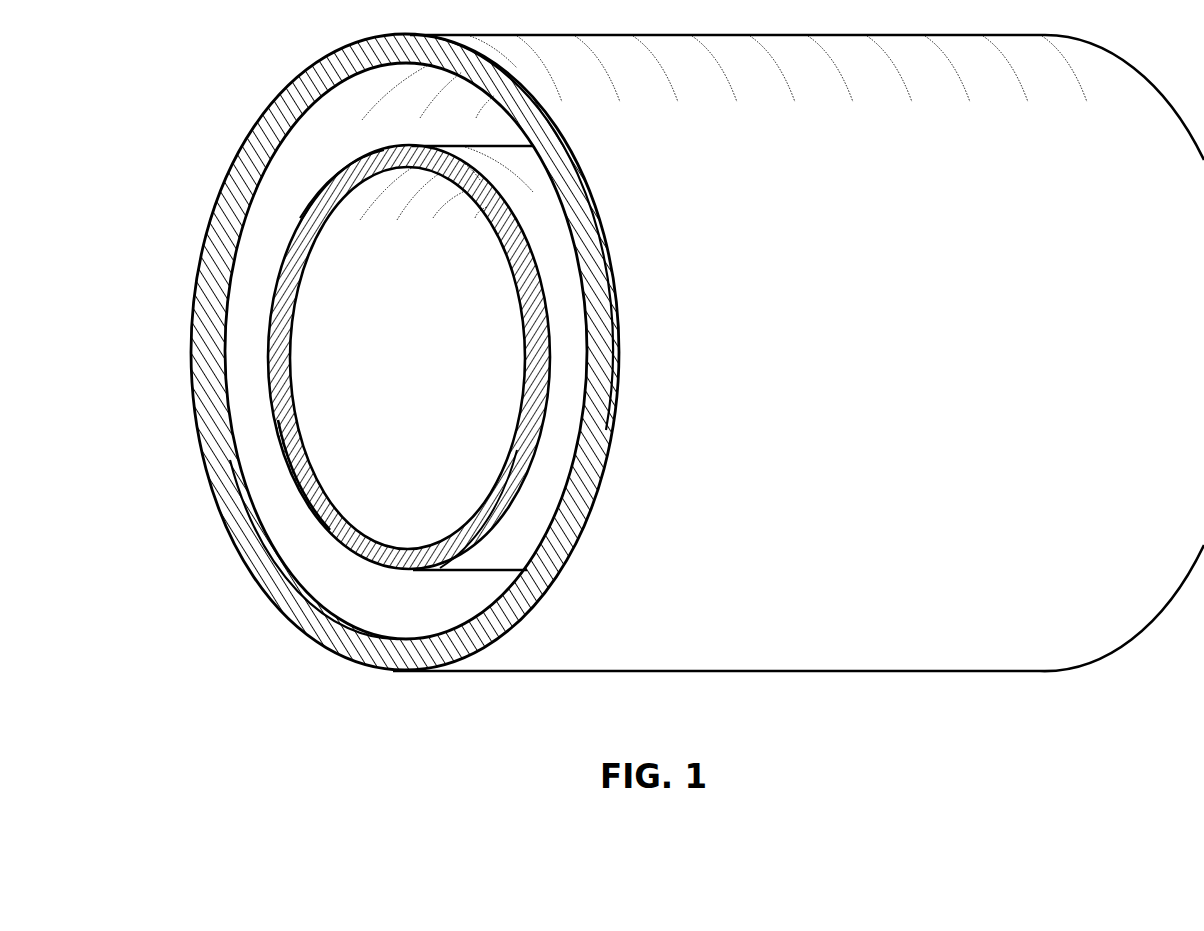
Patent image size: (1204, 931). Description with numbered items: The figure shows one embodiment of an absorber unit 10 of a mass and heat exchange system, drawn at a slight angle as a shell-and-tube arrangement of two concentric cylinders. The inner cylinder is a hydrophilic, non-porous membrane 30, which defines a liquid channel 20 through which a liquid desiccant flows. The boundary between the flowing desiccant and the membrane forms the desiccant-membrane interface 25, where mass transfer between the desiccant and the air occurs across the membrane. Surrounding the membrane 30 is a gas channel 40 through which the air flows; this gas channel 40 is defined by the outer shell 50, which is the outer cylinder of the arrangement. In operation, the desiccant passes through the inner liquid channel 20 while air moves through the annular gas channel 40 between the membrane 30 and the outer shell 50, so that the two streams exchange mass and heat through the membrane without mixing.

The absorber unit 10 is at (193, 104).
The liquid channel 20 is at (355, 351).
The desiccant-membrane interface 25 is at (308, 432).
The hydrophilic, non-porous membrane 30 is at (282, 491).
The gas channel 40 is at (345, 140).
The outer shell 50 is at (246, 588).